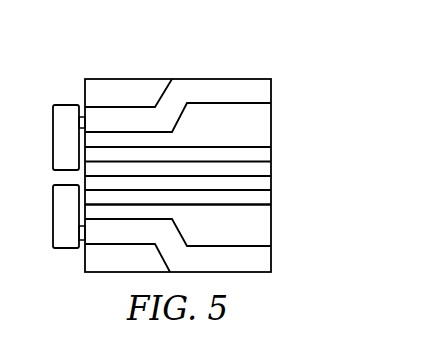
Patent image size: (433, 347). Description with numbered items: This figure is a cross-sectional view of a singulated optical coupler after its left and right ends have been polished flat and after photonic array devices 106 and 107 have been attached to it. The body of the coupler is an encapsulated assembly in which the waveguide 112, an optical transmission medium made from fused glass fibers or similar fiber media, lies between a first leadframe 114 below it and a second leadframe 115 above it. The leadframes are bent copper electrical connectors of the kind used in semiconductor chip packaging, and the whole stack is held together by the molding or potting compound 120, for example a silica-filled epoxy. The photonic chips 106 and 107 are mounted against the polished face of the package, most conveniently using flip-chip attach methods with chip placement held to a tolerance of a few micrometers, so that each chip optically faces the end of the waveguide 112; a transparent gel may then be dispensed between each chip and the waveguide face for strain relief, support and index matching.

The photonic array device 106 is at (62, 249).
The photonic array device 107 is at (60, 105).
The waveguide 112 is at (284, 148).
The electrical connector 114 is at (268, 261).
The leadframe 115 is at (273, 86).
The molding compound 120 is at (118, 80).